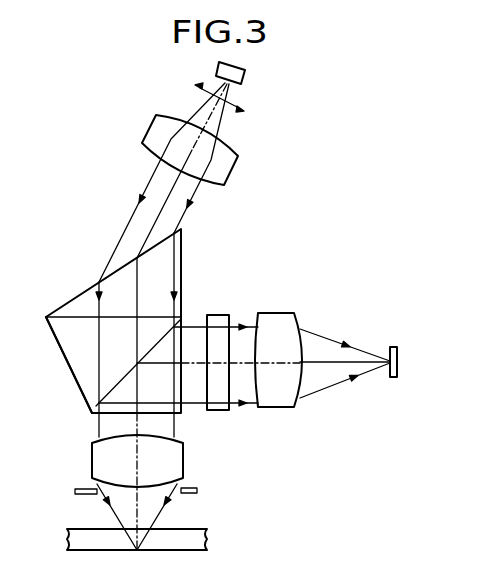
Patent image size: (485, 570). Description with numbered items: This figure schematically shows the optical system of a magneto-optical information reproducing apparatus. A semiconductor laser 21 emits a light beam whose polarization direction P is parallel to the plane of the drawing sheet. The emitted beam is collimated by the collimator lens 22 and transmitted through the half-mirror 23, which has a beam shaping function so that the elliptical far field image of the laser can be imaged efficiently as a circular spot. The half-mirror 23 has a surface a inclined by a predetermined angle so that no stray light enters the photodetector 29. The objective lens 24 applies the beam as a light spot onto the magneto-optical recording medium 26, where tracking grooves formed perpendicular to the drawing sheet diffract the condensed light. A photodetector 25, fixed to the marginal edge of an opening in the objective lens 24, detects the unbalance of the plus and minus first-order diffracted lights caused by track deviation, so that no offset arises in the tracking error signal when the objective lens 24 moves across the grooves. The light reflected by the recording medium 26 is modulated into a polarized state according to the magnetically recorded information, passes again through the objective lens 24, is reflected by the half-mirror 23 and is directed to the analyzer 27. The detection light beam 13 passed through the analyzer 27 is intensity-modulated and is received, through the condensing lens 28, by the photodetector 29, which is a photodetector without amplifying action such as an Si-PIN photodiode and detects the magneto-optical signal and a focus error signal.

The semiconductor laser 21 is at (246, 74).
The direction of P-polarization P is at (230, 108).
The collimator lens 22 is at (146, 128).
The half-mirror 23 is at (70, 301).
The surface a is at (68, 361).
The analyzer 27 is at (218, 315).
The condensing lens 28 is at (277, 313).
The photodetector 29 is at (392, 348).
The detection light beam 13 is at (352, 380).
The objective lens 24 is at (92, 458).
The photodetector 25 is at (75, 491).
The magneto-optical recording medium 26 is at (208, 542).